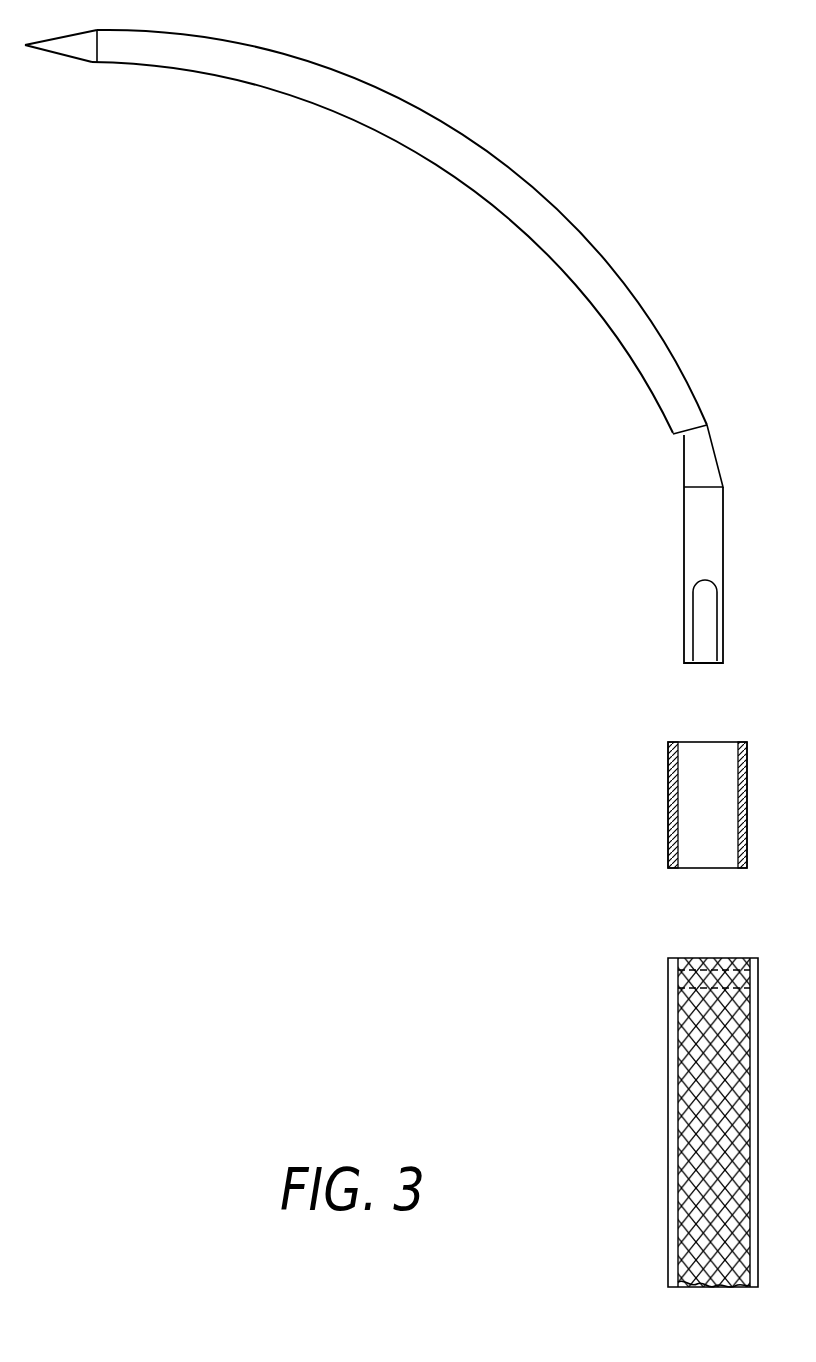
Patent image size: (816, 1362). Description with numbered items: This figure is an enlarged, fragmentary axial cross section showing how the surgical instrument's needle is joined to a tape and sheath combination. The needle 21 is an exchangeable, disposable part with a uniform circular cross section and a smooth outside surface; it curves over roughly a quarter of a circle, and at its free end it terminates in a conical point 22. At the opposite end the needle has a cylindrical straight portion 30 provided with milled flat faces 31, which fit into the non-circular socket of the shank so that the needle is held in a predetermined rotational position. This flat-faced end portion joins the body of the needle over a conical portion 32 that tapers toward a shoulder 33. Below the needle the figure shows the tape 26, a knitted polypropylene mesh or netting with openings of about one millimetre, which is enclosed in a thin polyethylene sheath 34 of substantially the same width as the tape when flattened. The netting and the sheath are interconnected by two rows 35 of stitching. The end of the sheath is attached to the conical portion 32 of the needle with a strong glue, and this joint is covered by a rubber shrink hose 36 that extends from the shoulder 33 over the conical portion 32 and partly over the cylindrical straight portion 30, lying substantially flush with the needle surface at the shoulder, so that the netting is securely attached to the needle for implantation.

The needle 21 is at (406, 145).
The point 22 is at (27, 47).
The tape 26 is at (687, 1055).
The straight portion 30 is at (686, 582).
The flat faces 31 is at (701, 624).
The conical portion 32 is at (688, 471).
The shoulder 33 is at (676, 439).
The sheath 34 is at (670, 1135).
The rows of stitching 35 is at (686, 969).
The rubber shrink hose 36 is at (668, 812).